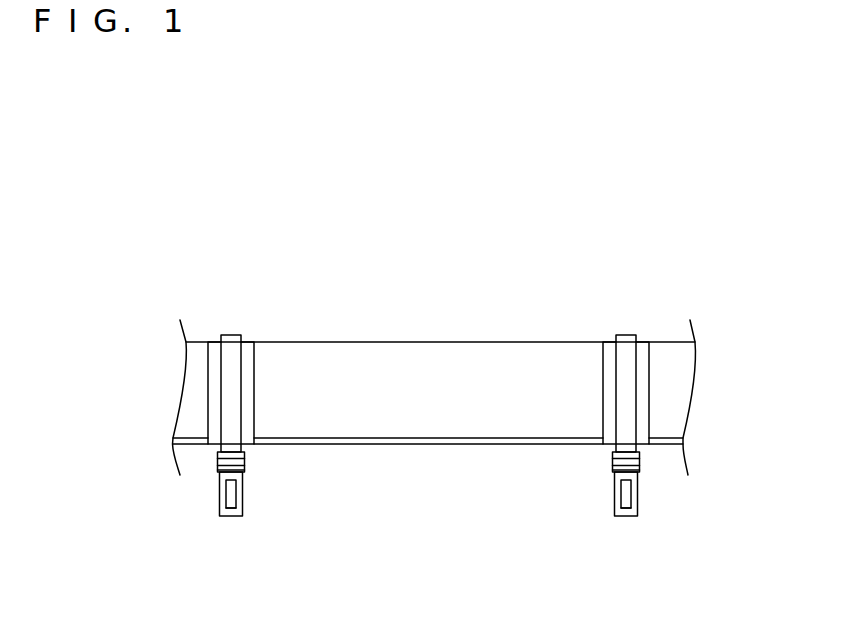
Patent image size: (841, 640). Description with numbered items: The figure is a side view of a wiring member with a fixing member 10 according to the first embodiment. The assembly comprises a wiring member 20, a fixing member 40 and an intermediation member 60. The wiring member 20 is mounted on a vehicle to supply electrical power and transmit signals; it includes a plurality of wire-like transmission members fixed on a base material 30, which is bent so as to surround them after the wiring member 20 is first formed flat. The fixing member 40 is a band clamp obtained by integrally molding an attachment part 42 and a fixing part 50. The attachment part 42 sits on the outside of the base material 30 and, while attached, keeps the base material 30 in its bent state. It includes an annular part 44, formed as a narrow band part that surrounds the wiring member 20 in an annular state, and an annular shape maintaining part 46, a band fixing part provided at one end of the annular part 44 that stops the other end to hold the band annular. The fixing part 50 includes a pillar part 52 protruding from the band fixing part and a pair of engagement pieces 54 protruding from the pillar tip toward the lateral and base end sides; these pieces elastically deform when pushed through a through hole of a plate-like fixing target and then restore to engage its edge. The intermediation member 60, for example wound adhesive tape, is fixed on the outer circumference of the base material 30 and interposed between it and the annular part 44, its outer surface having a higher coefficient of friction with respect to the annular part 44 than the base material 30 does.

The wiring member with a fixing member 10 is at (260, 183).
The wiring member 20 is at (410, 339).
The base material 30 is at (502, 357).
The fixing member 40 is at (304, 468).
The attachment part 42 is at (250, 470).
The annular part 44 is at (236, 334).
The annular shape maintaining part 46 is at (217, 470).
The fixing part 50 is at (250, 505).
The pillar part 52 is at (222, 498).
The pair of engagement pieces 54 is at (233, 517).
The intermediation member 60 is at (215, 339).